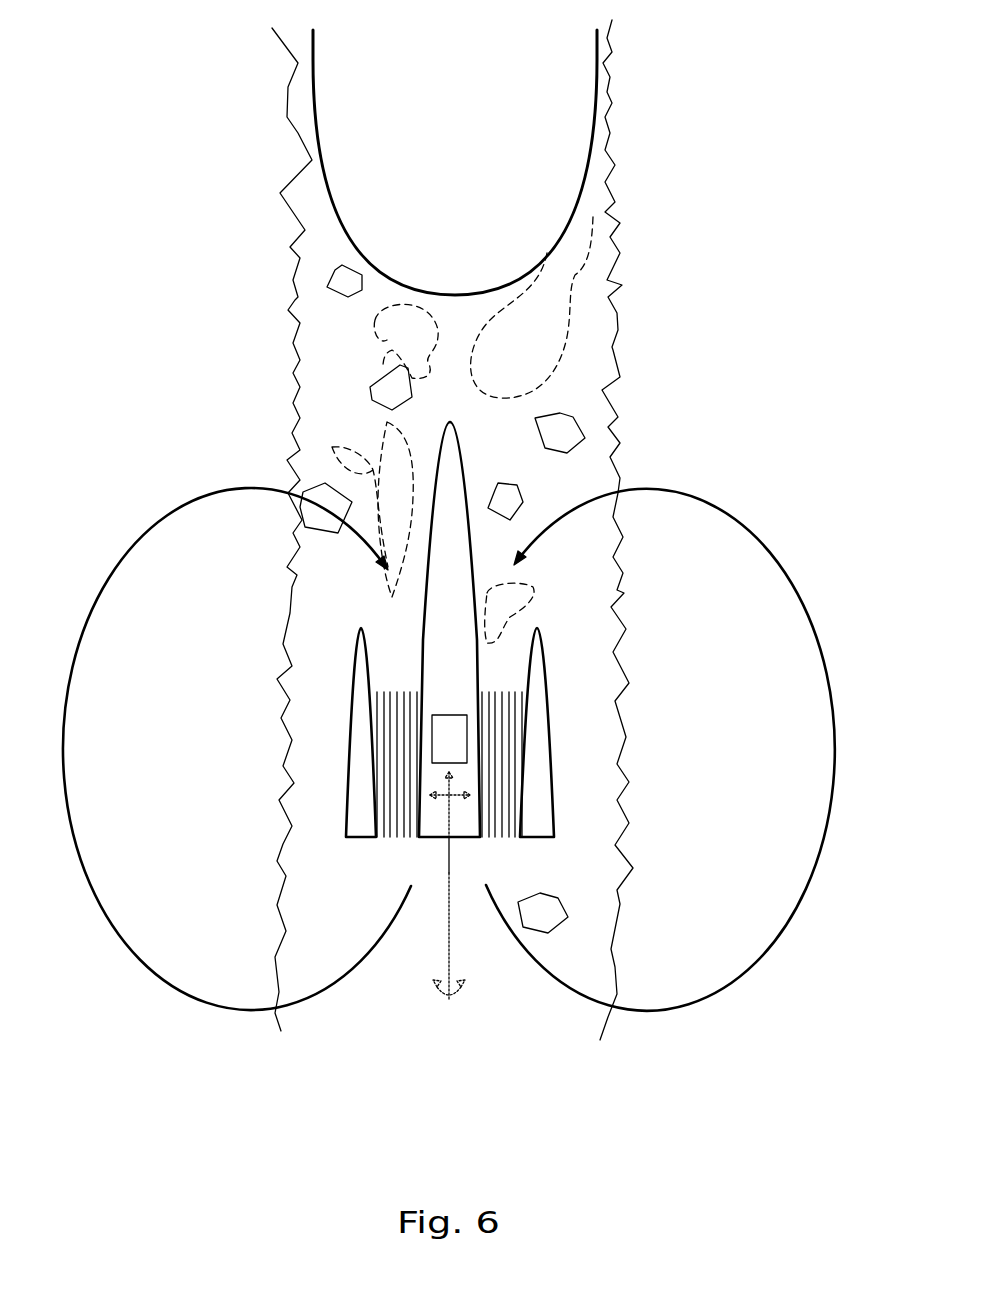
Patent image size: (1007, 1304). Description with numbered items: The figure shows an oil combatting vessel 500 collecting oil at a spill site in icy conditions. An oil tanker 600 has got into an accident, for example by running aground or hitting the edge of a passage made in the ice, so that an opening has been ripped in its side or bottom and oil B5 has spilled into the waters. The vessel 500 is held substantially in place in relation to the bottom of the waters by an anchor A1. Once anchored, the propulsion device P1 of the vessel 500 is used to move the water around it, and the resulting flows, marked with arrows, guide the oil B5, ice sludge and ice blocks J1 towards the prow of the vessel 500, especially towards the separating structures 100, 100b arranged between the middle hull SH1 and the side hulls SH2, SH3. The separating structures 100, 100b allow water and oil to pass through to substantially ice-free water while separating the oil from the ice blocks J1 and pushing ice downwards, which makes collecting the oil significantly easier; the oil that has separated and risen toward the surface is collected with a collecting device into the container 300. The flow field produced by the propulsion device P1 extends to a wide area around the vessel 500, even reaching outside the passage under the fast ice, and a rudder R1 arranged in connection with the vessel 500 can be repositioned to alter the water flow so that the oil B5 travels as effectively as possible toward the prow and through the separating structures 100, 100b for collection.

The oil tanker 600 is at (598, 110).
The ice blocks J1 is at (342, 278).
The oil B5 is at (553, 352).
The container 300 is at (455, 715).
The vessel 500 is at (570, 650).
The middle hull SH1 is at (424, 620).
The side hull SH2 is at (346, 822).
The side hull SH3 is at (554, 800).
The separating structure 100 is at (390, 700).
The separating structure 100b is at (503, 708).
The propulsion device P1 is at (432, 797).
The rudder R1 is at (452, 830).
The anchor A1 is at (440, 997).